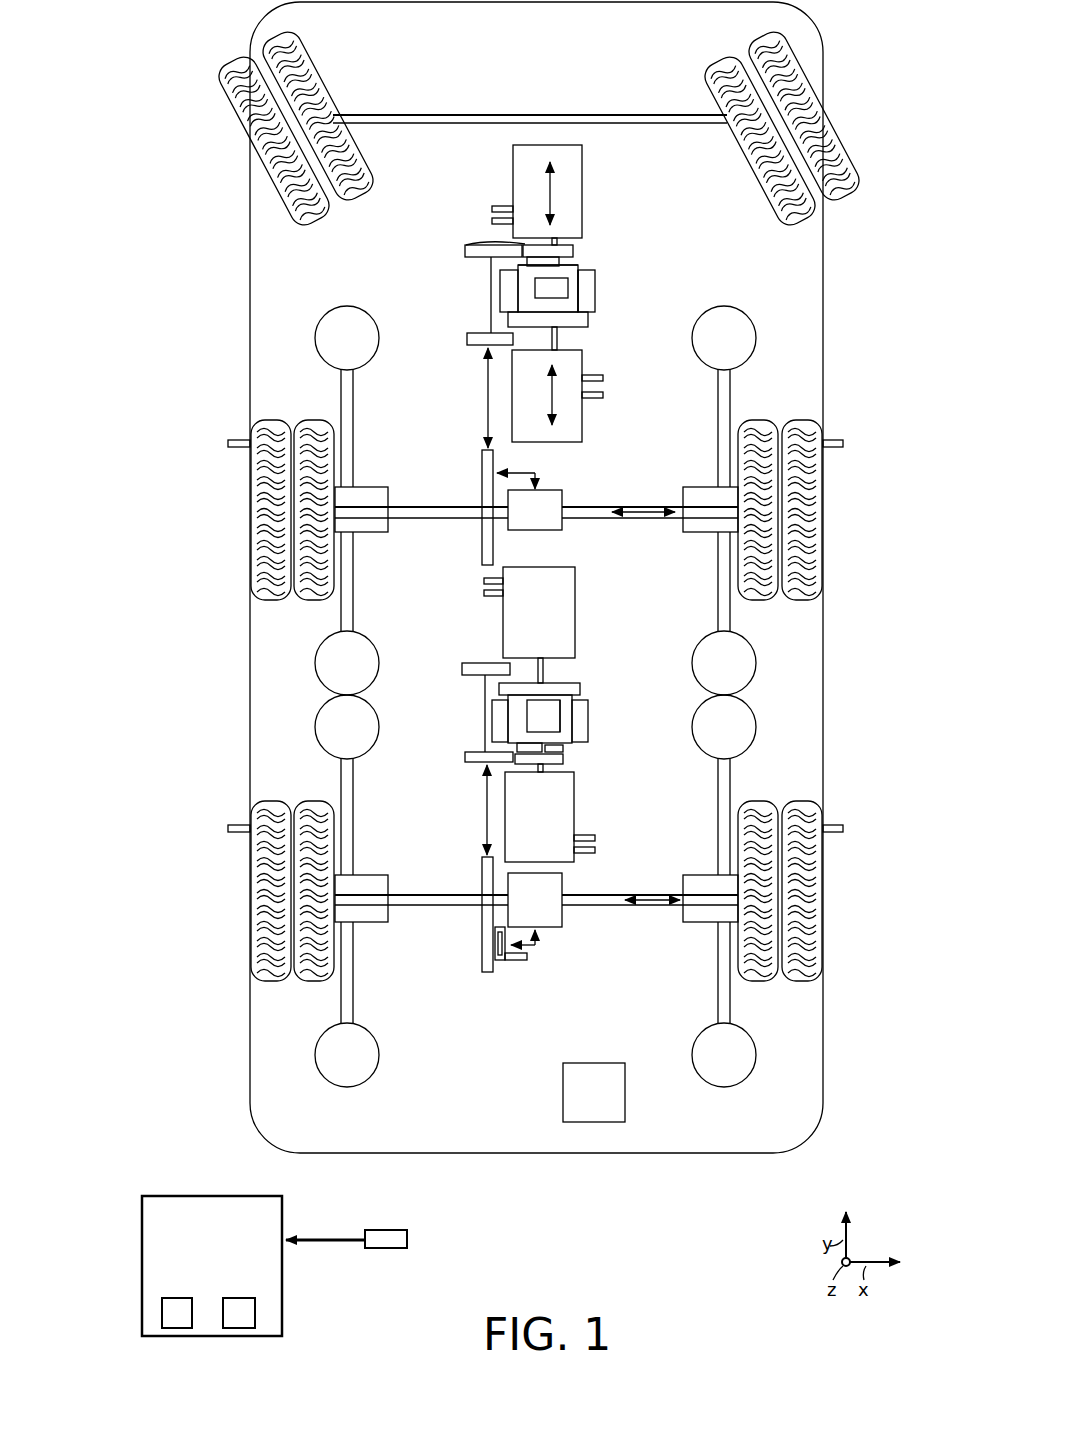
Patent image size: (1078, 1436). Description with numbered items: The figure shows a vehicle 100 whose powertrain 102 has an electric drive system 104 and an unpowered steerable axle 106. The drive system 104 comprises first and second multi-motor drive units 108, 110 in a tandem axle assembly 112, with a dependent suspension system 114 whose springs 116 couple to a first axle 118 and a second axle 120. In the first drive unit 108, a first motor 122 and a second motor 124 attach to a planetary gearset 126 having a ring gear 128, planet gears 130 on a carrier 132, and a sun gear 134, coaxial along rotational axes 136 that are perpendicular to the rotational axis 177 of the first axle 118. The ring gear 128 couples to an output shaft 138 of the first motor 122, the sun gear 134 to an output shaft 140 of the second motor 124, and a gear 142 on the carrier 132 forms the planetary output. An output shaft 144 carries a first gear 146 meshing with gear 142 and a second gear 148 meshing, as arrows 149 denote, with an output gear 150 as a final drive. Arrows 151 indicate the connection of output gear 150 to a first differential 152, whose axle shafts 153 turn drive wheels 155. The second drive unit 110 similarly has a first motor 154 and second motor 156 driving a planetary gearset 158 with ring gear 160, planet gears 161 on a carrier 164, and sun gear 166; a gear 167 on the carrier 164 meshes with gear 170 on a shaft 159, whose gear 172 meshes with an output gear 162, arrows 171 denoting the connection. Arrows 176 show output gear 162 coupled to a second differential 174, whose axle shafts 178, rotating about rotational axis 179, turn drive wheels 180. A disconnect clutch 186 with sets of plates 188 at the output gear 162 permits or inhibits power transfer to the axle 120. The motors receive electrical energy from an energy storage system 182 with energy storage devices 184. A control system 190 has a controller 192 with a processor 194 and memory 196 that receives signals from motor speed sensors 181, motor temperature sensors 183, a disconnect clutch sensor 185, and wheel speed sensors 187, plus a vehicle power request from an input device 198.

The vehicle 100 is at (178, 60).
The powertrain 102 is at (393, 190).
The electric drive system 104 is at (428, 215).
The unpowered steerable axle 106 is at (385, 102).
The first multi-motor drive unit 108 is at (677, 208).
The second multi-motor drive unit 110 is at (609, 602).
The tandem axle assembly 112 is at (197, 495).
The dependent suspension system 114 is at (303, 316).
The springs 116 is at (340, 405).
The first axle 118 is at (388, 482).
The second axle 120 is at (405, 878).
The first motor 122 is at (582, 436).
The second motor 124 is at (582, 183).
The planetary gearset 126 is at (608, 293).
The ring gear 128 is at (596, 287).
The planet gears 130 is at (571, 306).
The carrier 132 is at (572, 266).
The sun gear 134 is at (551, 289).
The rotational axes 136 is at (548, 205).
The output shaft 138 is at (557, 336).
The output shaft 140 is at (481, 237).
The gear 142 is at (555, 249).
The output shaft 144 is at (491, 316).
The first gear 146 is at (483, 257).
The second gear 148 is at (467, 338).
The arrows 149 is at (488, 396).
The output gear 150 is at (482, 497).
The arrows 151 is at (536, 473).
The first differential 152 is at (522, 530).
The axle shafts 153 is at (445, 520).
The first motor 154 is at (575, 620).
The drive wheels 155 is at (275, 420).
The second motor 156 is at (575, 797).
The planetary gearset 158 is at (610, 713).
The shaft 159 is at (485, 713).
The ring gear 160 is at (588, 732).
The planet gears 161 is at (563, 711).
The output gear 162 is at (482, 886).
The carrier 164 is at (563, 758).
The sun gear 166 is at (544, 716).
The gear 167 is at (560, 770).
The gear 170 is at (465, 757).
The arrows 171 is at (487, 806).
The gear 172 is at (487, 663).
The second differential 174 is at (563, 879).
The arrows 176 is at (536, 940).
The rotational axis 177 is at (642, 516).
The axle shafts 178 is at (433, 907).
The rotational axis 179 is at (655, 905).
The drive wheels 180 is at (272, 802).
The motor speed sensors 181 is at (604, 397).
The energy storage system 182 is at (543, 1120).
The motor temperature sensors 183 is at (604, 379).
The energy storage devices 184 is at (626, 1107).
The disconnect clutch sensor 185 is at (520, 961).
The disconnect clutch 186 is at (503, 962).
The wheel speed sensors 187 is at (239, 834).
The sets of plates 188 is at (494, 943).
The control system 190 is at (184, 1280).
The controller 192 is at (212, 1266).
The processor 194 is at (177, 1329).
The memory 196 is at (240, 1329).
The input device 198 is at (385, 1230).